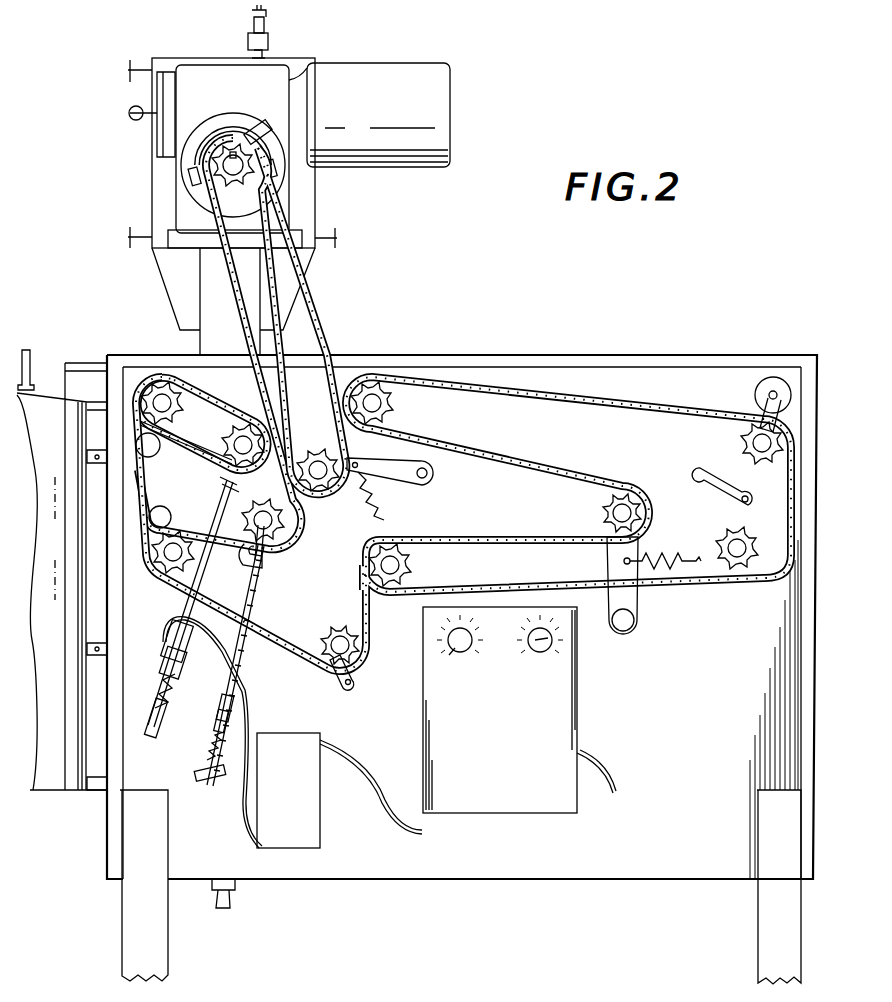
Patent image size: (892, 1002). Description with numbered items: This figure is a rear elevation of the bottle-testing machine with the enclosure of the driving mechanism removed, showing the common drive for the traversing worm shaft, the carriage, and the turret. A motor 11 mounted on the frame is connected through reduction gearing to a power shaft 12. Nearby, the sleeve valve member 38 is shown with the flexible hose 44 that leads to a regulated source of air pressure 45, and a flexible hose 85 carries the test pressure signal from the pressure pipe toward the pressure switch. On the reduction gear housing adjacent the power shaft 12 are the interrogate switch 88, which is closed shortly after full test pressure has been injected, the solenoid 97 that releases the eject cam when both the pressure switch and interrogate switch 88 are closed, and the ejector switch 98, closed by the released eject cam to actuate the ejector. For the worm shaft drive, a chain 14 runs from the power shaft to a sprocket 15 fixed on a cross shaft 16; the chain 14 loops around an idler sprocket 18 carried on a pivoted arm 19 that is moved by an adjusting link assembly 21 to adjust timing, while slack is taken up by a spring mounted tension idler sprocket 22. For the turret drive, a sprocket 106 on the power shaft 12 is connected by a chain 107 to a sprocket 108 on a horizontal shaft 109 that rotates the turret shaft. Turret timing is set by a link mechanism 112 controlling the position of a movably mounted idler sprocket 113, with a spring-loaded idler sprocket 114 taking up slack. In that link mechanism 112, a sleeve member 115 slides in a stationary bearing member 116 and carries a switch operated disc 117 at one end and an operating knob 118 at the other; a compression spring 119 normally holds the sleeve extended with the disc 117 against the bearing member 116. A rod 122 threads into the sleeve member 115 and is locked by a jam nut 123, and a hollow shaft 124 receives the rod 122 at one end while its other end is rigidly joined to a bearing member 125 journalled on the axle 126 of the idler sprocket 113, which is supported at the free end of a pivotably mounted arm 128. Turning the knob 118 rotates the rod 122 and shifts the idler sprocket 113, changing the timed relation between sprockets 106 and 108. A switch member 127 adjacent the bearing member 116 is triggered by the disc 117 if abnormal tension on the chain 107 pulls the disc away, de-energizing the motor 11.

The motor 11 is at (398, 70).
The power shaft 12 is at (222, 150).
The chain 14 is at (185, 410).
The sprocket 15 is at (758, 408).
The cross shaft 16 is at (755, 444).
The idler sprocket 18 is at (248, 425).
The pivoted arm 19 is at (180, 445).
The adjusting link assembly 21 is at (156, 741).
The spring mounted tension idler sprocket 22 is at (362, 500).
The sleeve valve member 38 is at (268, 42).
The flexible hose 44 is at (28, 368).
The regulated source of air pressure 45 is at (45, 795).
The flexible hose 85 is at (266, 22).
The interrogate switch 88 is at (275, 168).
The solenoid 97 is at (268, 128).
The ejector switch 98 is at (189, 176).
The sprocket 106 is at (262, 200).
The chain 107 is at (215, 290).
The sprocket 108 is at (358, 630).
The horizontal shaft 109 is at (352, 665).
The link mechanism 112 is at (270, 602).
The idler sprocket 113 is at (285, 520).
The spring-loaded idler sprocket 114 is at (605, 507).
The sleeve member 115 is at (207, 748).
The stationary bearing member 116 is at (180, 703).
The switch operated disc 117 is at (232, 722).
The operating knob 118 is at (200, 778).
The compression spring 119 is at (222, 742).
The rod 122 is at (248, 640).
The jam nut 123 is at (185, 662).
The hollow shaft 124 is at (262, 600).
The bearing member 125 is at (270, 535).
The axle 126 is at (270, 564).
The switch member 127 is at (238, 706).
The pivotably mounted arm 128 is at (200, 515).